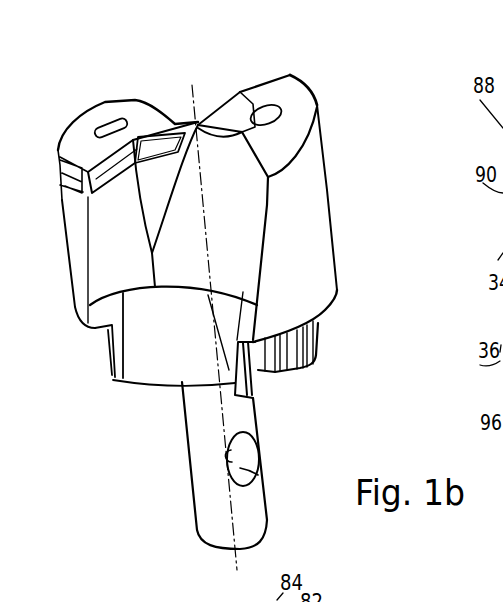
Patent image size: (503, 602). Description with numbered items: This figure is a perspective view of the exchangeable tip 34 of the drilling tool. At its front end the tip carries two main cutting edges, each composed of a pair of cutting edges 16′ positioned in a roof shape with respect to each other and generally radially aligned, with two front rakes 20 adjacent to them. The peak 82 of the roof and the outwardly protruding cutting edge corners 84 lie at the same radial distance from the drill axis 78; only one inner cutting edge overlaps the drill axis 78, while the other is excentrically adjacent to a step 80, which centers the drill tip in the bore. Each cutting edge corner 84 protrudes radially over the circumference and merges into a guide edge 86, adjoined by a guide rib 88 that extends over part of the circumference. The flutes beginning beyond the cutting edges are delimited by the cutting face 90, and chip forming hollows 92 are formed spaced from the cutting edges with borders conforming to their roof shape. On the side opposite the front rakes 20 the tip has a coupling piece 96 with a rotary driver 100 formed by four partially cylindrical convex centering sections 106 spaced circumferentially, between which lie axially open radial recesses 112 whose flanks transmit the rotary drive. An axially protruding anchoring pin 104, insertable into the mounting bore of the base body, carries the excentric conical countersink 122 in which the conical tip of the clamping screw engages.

The inner cutting edge 16′ is at (167, 140).
The front rake 20 is at (100, 113).
The exchangeable tip 34 is at (298, 262).
The drill axis 78 is at (223, 560).
The step 80 is at (192, 85).
The peak 82 is at (133, 140).
The cutting edge corner 84 is at (291, 76).
The guide edge 86 is at (83, 190).
The guide rib 88 is at (62, 173).
The cutting face 90 is at (100, 263).
The chip forming hollow 92 is at (268, 78).
The coupling piece 96 is at (322, 353).
The rotary driver 100 is at (290, 367).
The anchoring pin 104 is at (213, 507).
The convex centering section 106 is at (318, 333).
The radial recess 112 is at (262, 377).
The conical countersink 122 is at (258, 473).